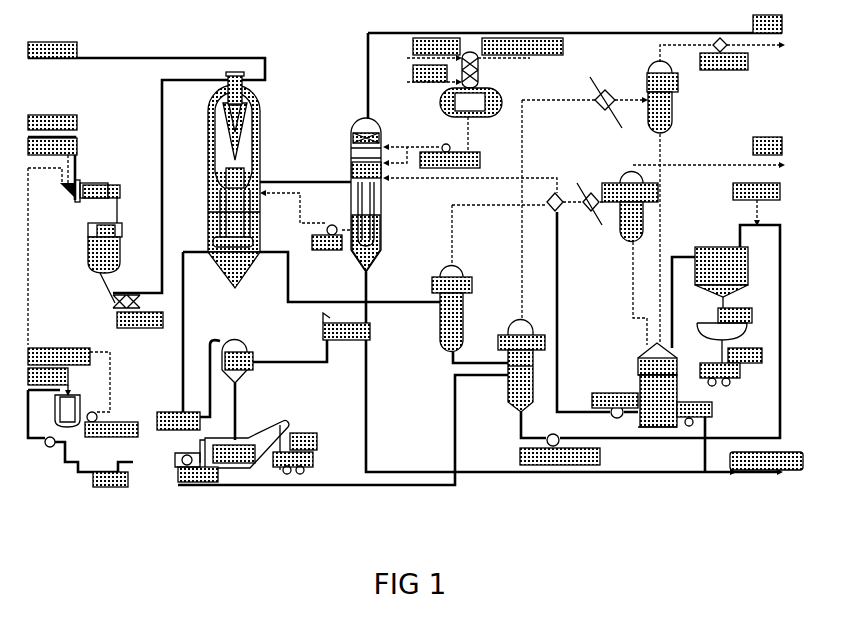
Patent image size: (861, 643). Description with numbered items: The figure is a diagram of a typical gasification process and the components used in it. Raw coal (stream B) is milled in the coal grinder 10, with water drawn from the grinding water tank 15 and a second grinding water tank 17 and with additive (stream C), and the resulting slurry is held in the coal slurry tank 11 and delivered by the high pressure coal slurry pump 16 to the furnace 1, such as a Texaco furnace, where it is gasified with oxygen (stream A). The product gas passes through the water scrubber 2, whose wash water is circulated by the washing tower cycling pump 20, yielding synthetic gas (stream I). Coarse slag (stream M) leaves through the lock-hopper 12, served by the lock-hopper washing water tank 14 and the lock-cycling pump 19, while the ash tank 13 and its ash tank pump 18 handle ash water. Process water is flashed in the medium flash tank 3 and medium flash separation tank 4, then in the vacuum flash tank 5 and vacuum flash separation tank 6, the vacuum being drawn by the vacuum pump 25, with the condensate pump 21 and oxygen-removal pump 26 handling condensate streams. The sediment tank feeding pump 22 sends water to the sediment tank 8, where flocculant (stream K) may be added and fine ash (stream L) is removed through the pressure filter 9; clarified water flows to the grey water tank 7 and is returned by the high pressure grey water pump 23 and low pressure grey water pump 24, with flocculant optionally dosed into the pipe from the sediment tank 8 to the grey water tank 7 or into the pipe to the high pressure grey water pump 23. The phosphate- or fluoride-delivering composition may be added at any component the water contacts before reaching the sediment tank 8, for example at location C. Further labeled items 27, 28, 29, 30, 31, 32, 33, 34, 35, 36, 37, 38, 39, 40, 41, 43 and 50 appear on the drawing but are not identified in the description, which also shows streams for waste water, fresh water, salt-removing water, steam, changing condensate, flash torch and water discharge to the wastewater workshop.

The furnace 1 is at (52, 50).
The water scrubber 2 is at (52, 122).
The medium flash tank 3 is at (52, 146).
The medium flash separation tank 4 is at (97, 201).
The vacuum flash tank 5 is at (105, 263).
The vacuum flash separation tank 6 is at (138, 311).
The grey water tank 7 is at (59, 356).
The sediment tank 8 is at (54, 397).
The pressure filter 9 is at (111, 424).
The coal grinder 10 is at (110, 479).
The coal slurry tank 11 is at (178, 421).
The lock-hopper 12 is at (196, 467).
The ash tank 13 is at (247, 444).
The lock-hopper washing water tank 14 is at (298, 447).
The grinding water tank 15 is at (293, 463).
The high pressure coal slurry pump 16 is at (237, 362).
The grinding water tank 17 is at (346, 326).
The ash tank pump 18 is at (327, 242).
The lock-cycling pump 19 is at (366, 195).
The washing tower cycling pump 20 is at (436, 46).
The condensate pump 21 is at (522, 46).
The sediment tank feeding pump 22 is at (430, 73).
The high pressure grey water pump 23 is at (471, 102).
The low pressure grey water pump 24 is at (450, 160).
The vacuum pump 25 is at (452, 309).
The oxygen-removal pump 26 is at (521, 366).
The stream 27 is at (560, 456).
The stream 28 is at (615, 400).
The storage vessel 29 is at (657, 385).
The stream 30 is at (694, 414).
The separator 31 is at (662, 97).
The stream 32 is at (724, 61).
The stream 33 is at (767, 24).
The stream 34 is at (767, 146).
The separator 35 is at (630, 207).
The stream 36 is at (756, 191).
The hopper 37 is at (721, 271).
The discharge 38 is at (724, 335).
The stream 39 is at (745, 355).
The cart 40 is at (720, 374).
The product stream 41 is at (766, 461).
The filter column 43 is at (470, 75).
The reactor vessel 50 is at (227, 180).